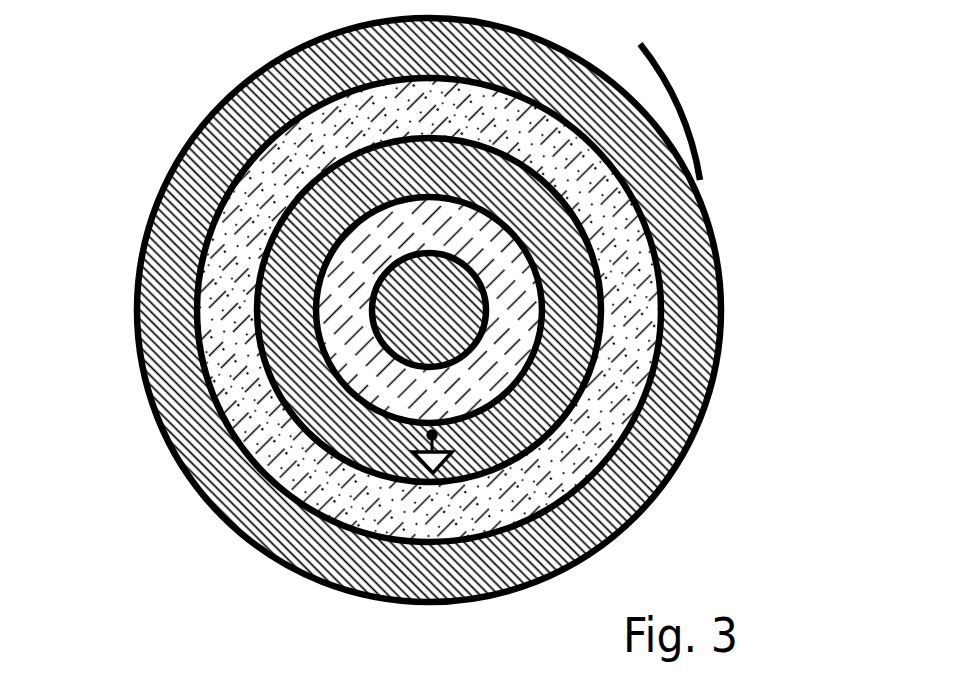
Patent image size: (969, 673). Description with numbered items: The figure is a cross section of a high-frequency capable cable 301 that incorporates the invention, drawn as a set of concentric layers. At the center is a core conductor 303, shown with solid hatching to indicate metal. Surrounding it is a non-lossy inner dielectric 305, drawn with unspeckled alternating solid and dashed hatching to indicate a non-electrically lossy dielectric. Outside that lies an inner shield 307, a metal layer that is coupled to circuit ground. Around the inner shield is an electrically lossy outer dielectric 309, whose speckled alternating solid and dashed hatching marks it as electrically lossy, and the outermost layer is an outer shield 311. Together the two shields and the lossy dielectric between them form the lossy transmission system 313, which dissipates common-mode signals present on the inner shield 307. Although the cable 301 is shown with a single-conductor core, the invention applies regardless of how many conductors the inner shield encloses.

The high-frequency capable cable 301 is at (379, 310).
The core conductor 303 is at (408, 320).
The non-lossy inner dielectric 305 is at (413, 235).
The inner shield 307 is at (409, 175).
The electrically lossy outer dielectric 309 is at (406, 121).
The outer shield 311 is at (409, 62).
The lossy transmission system 313 is at (592, 237).